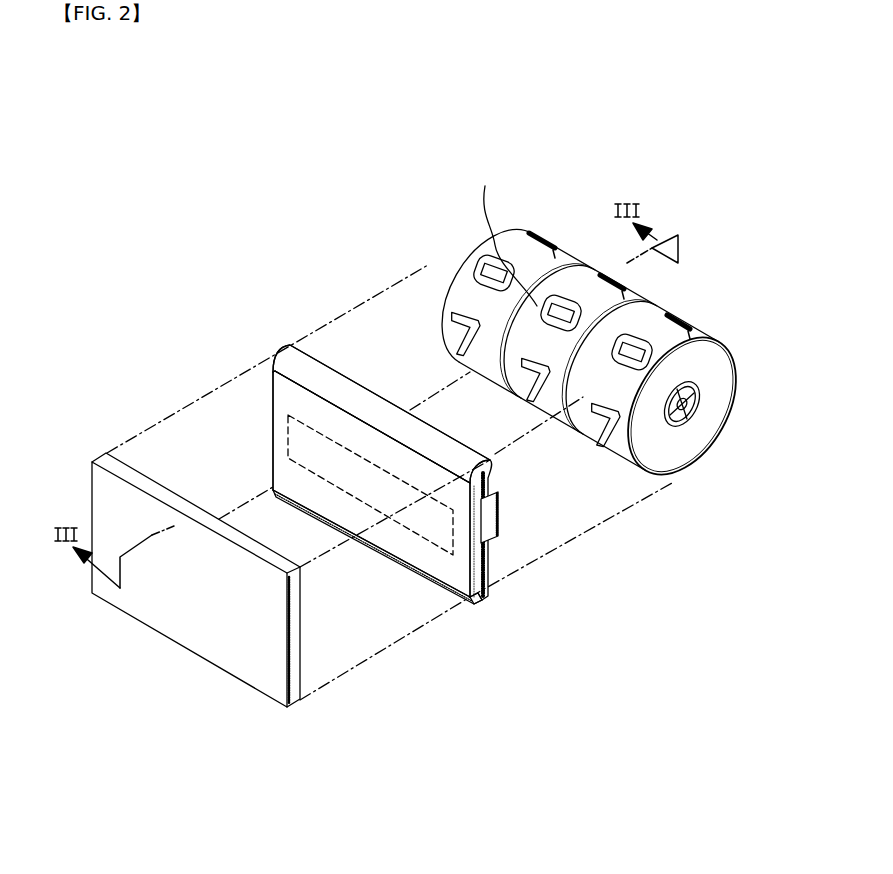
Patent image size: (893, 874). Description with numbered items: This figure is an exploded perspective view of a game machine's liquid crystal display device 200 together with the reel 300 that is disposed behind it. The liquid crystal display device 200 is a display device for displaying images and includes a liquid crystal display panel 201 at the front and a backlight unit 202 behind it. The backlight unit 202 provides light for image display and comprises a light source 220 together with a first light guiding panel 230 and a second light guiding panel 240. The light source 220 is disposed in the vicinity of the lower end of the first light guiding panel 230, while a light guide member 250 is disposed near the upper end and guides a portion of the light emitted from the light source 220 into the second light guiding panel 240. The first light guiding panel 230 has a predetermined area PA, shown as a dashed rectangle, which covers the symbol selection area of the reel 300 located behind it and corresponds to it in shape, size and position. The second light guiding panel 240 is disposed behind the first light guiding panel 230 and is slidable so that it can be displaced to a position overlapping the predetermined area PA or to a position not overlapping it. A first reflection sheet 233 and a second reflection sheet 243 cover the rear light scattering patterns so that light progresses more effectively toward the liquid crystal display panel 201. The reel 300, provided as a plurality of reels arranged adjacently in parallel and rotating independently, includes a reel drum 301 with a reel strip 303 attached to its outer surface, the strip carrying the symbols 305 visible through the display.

The liquid crystal display device 200 is at (204, 302).
The liquid crystal display panel 201 is at (243, 663).
The backlight unit 202 is at (483, 617).
The light source 220 is at (473, 607).
The first light guiding panel 230 is at (447, 567).
The first reflection sheet 233 is at (478, 592).
The second light guiding panel 240 is at (490, 535).
The second reflection sheet 243 is at (500, 510).
The light guide member 250 is at (300, 362).
The predetermined area PA is at (288, 432).
The reel 300 is at (672, 310).
The reel drum 301 is at (697, 418).
The reel strip 303 is at (667, 477).
The symbols 305 is at (445, 338).